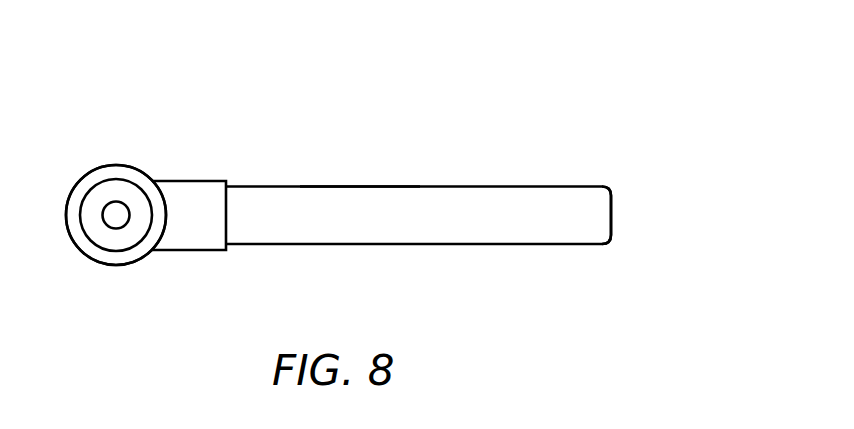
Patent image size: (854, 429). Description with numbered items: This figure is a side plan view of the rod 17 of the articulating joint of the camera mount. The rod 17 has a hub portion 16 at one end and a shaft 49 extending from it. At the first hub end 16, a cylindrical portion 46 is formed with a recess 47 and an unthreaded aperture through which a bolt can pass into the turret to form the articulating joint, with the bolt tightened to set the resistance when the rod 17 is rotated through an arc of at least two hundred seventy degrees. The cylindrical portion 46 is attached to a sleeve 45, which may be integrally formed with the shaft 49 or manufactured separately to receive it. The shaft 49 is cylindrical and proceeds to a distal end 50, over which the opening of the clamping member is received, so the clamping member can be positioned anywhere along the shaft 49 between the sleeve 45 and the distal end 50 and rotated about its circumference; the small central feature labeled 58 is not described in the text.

The hub portion 16 is at (131, 145).
The rod 17 is at (455, 155).
The sleeve 45 is at (172, 180).
The cylindrical portion 46 is at (90, 172).
The recess 47 is at (112, 238).
The shaft 49 is at (307, 183).
The distal end 50 is at (611, 215).
The central aperture 58 is at (117, 217).